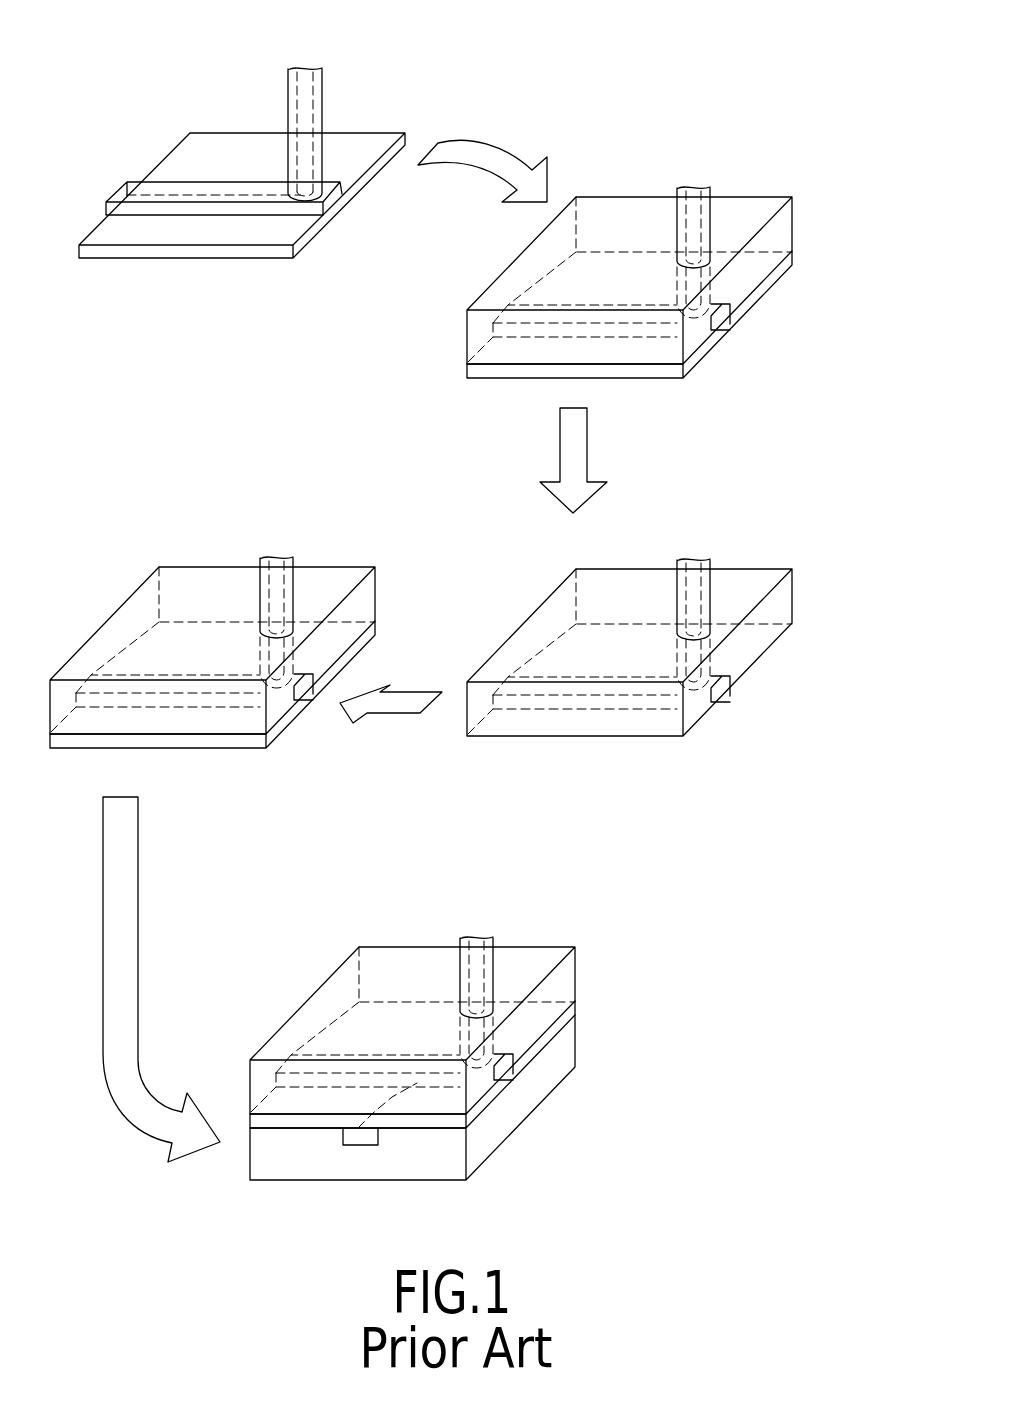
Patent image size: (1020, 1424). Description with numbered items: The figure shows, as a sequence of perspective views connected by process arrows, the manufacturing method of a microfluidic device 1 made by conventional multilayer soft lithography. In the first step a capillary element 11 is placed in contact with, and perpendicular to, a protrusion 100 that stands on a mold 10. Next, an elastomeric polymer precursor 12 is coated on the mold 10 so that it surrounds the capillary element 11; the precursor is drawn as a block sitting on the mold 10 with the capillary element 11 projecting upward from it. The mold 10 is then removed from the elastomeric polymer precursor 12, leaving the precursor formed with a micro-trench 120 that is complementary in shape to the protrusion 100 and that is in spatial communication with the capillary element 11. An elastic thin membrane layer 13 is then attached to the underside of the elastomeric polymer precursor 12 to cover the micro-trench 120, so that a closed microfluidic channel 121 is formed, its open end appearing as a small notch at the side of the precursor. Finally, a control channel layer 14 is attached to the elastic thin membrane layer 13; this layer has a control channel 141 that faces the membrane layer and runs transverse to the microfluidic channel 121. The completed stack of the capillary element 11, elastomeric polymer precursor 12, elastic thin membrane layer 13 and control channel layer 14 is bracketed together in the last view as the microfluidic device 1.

The microfluidic device 1 is at (501, 1091).
The mold 10 is at (375, 128).
The protrusion 100 is at (332, 201).
The capillary element 11 is at (288, 100).
The elastomeric polymer precursor 12 is at (765, 196).
The micro-trench 120 is at (716, 691).
The microfluidic channel 121 is at (297, 688).
The elastic thin membrane layer 13 is at (224, 746).
The control channel layer 14 is at (574, 1050).
The control channel 141 is at (364, 1141).